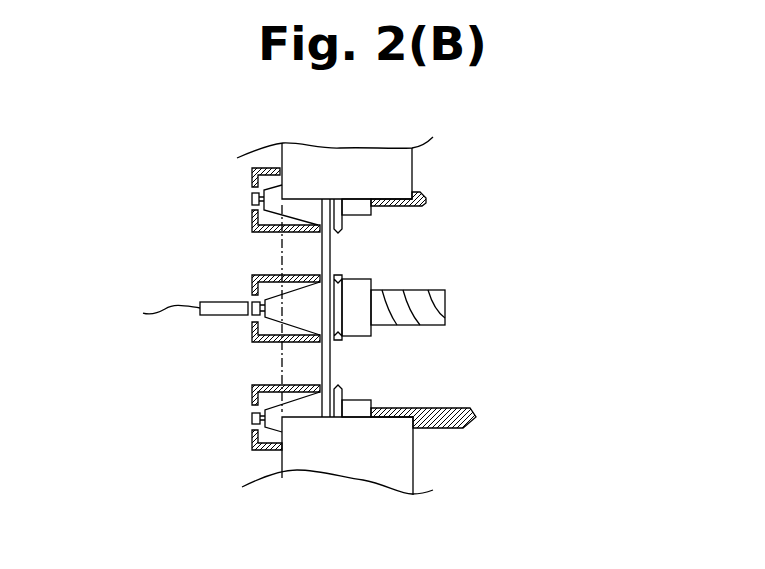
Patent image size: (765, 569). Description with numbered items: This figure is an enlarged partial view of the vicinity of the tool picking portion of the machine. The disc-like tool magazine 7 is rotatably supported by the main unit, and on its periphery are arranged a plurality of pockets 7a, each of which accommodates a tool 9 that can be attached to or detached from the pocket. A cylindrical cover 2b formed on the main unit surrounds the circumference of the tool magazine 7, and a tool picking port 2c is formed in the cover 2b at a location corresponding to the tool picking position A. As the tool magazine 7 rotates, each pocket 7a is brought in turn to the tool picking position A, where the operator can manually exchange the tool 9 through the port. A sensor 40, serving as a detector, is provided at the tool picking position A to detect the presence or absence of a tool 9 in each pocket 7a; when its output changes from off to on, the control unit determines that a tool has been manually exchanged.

The tool magazine 7 is at (516, 153).
The pocket 7a is at (252, 221).
The tool 9 is at (417, 192).
The cover 2b is at (413, 455).
The tool picking port 2c is at (366, 213).
The sensor 40 is at (212, 317).
The tool picking position A is at (500, 298).